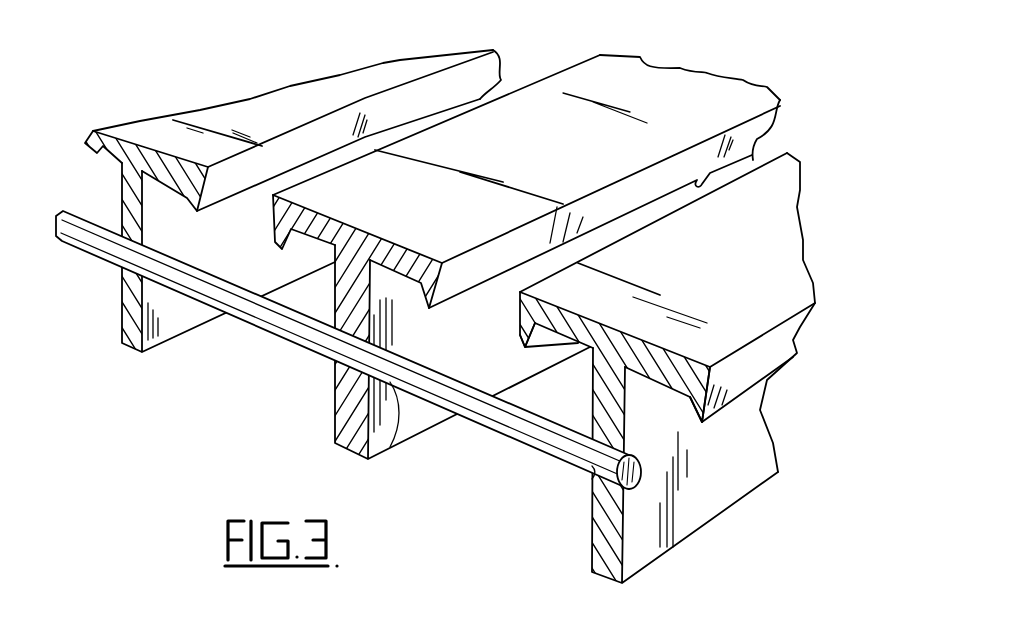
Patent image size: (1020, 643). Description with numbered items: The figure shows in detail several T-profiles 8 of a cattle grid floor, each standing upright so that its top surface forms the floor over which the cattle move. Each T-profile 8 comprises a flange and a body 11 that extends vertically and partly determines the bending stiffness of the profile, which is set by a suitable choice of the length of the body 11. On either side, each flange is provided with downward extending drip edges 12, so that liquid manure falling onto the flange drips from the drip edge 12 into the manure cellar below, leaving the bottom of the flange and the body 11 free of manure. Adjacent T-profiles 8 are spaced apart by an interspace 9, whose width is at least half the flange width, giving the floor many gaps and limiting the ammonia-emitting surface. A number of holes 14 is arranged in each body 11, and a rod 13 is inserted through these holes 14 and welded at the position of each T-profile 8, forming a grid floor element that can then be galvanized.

The T-profile 8 is at (128, 350).
The interspace 9 is at (480, 99).
The body 11 is at (692, 515).
The drip edge 12 is at (523, 345).
The rod 13 is at (520, 424).
The hole 14 is at (390, 447).